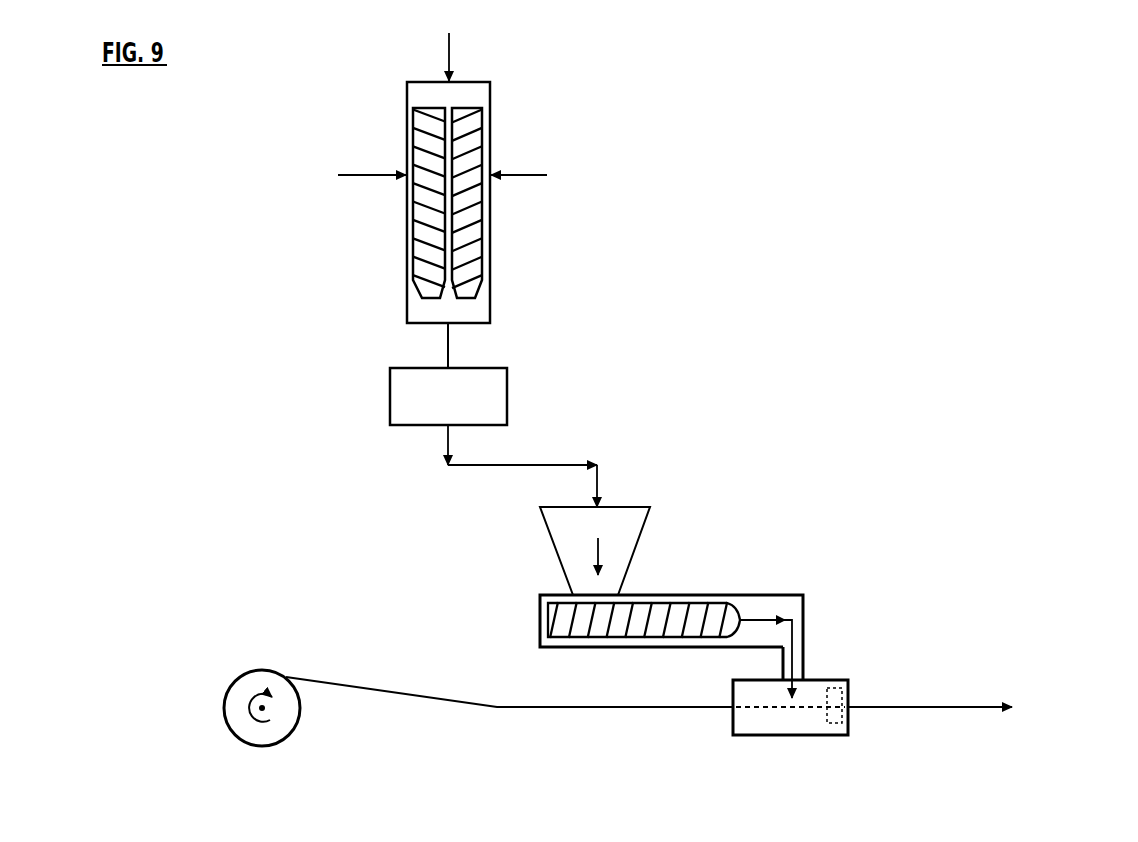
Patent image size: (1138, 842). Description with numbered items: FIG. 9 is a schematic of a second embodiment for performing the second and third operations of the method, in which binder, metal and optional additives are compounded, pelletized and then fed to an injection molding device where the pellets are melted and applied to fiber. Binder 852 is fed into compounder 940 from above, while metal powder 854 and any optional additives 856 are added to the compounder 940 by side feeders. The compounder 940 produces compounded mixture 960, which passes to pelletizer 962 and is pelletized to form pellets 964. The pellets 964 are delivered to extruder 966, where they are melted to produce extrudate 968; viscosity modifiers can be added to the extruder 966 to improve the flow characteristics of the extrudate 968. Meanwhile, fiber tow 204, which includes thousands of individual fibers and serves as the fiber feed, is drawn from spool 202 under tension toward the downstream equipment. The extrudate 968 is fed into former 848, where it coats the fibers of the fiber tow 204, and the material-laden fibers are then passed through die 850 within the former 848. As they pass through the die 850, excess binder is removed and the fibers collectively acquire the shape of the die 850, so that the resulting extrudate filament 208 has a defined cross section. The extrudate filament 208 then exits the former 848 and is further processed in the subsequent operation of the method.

The compounder 940 is at (407, 102).
The binder 852 is at (449, 43).
The metal powder 854 is at (314, 175).
The optional additives 856 is at (563, 176).
The compounded mixture 960 is at (448, 353).
The pellitizer 962 is at (390, 397).
The pellets 964 is at (532, 465).
The extruder 966 is at (663, 596).
The extrudate 968 is at (767, 615).
The former 848 is at (758, 734).
The die 850 is at (799, 748).
The spool 202 is at (285, 740).
The fiber tow 204 is at (305, 676).
The extrudate filament 208 is at (917, 706).